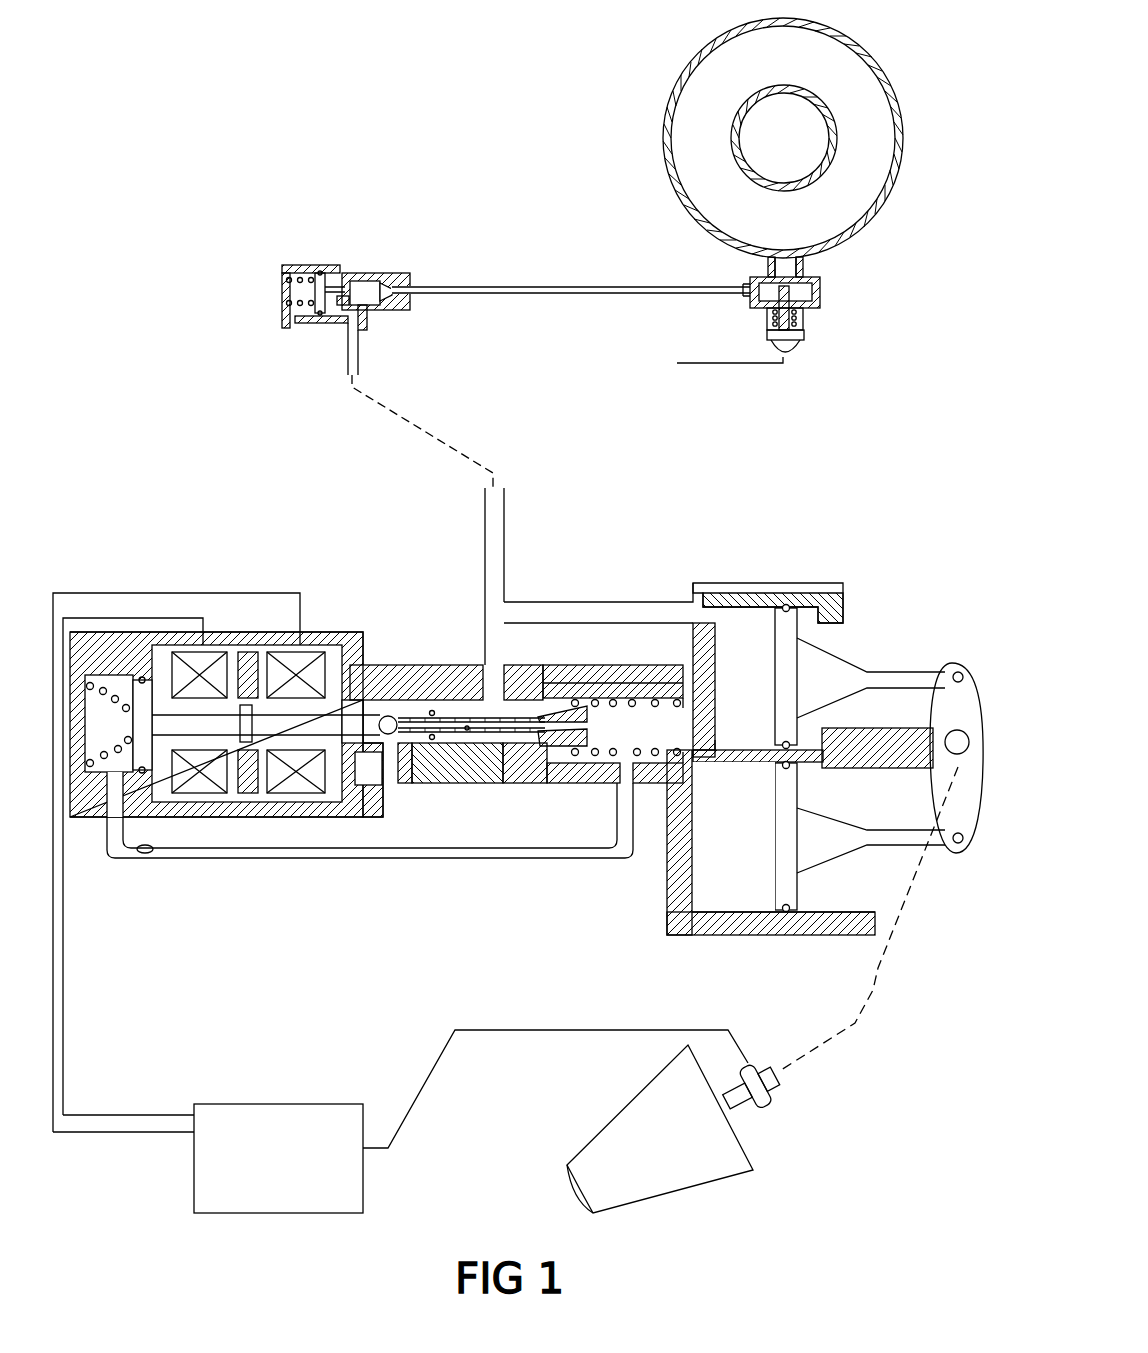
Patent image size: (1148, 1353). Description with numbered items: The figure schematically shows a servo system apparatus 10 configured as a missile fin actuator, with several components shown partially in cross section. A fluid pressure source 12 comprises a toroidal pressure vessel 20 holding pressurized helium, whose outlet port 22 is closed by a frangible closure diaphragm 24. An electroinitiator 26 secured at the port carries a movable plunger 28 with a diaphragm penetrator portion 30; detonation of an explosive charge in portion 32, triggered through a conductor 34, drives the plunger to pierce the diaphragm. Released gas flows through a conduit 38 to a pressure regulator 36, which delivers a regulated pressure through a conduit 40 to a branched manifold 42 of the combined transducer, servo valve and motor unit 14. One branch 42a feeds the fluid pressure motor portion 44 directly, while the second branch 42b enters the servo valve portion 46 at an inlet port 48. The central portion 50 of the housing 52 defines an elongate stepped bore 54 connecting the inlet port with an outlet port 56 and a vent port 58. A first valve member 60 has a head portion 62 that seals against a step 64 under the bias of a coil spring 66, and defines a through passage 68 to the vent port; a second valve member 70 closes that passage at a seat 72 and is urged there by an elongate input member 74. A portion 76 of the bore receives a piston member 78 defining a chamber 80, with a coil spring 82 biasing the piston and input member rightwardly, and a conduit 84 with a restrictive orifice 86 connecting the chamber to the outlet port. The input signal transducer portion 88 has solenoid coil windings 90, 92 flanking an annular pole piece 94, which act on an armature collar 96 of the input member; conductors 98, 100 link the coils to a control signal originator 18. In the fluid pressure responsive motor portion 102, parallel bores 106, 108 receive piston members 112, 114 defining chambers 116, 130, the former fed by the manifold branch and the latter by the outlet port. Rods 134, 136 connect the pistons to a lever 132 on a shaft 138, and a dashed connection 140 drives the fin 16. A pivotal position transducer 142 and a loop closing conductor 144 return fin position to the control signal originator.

The servo system apparatus 10 is at (835, 1145).
The fluid pressure source 12 is at (533, 184).
The combined control signal transducer, servo valve apparatus, and fluid pressure mo 14 is at (383, 552).
The vehicle control portion 16 is at (660, 1132).
The control signal originator 18 is at (288, 1174).
The toroidal pressure vessel 20 is at (662, 128).
The outlet port 22 is at (788, 262).
The frangible closure diaphragm 24 is at (768, 278).
The electroinitiator 26 is at (815, 306).
The movable plunger 28 is at (769, 319).
The diaphragm penetrator portion 30 is at (792, 294).
The explosive charge portion 32 is at (799, 348).
The conductor 34 is at (728, 374).
The pressure regulator 36 is at (341, 272).
The conduit 38 is at (554, 297).
The conduit 40 is at (385, 400).
The branched manifold 42 is at (485, 503).
The first manifold branch 42a is at (617, 590).
The second manifold branch 42b is at (497, 643).
The fluid pressure motor portion 44 is at (880, 518).
The servo valve portion 46 is at (498, 832).
The inlet port 48 is at (487, 685).
The central housing portion 50 is at (468, 773).
The housing 52 is at (675, 898).
The elongate stepped bore 54 is at (647, 760).
The outlet port 56 is at (698, 758).
The vent port 58 is at (395, 780).
The first valve member 60 is at (500, 765).
The head portion 62 is at (590, 732).
The step 64 is at (570, 765).
The coil spring 66 is at (660, 750).
The through passage 68 is at (460, 750).
The second valve member 70 is at (386, 716).
The seat 72 is at (396, 716).
The elongate input member 74 is at (303, 723).
The bore portion 76 is at (110, 770).
The piston member 78 is at (150, 760).
The chamber 80 is at (122, 737).
The coil spring 82 is at (107, 687).
The conduit 84 is at (283, 862).
The restrictive orifice 86 is at (145, 863).
The input signal transducer portion 88 is at (318, 833).
The solenoid coil winding 90 is at (207, 660).
The solenoid coil winding 92 is at (310, 660).
The annular pole piece 94 is at (248, 660).
The armature collar 96 is at (243, 745).
The electrical conductor 98 is at (65, 1025).
The electrical conductor 100 is at (75, 1117).
The fluid pressure responsive motor portion 102 is at (755, 937).
The bore 106 is at (733, 610).
The bore 108 is at (813, 912).
The piston member 112 is at (775, 635).
The piston member 114 is at (785, 788).
The chamber 116 is at (755, 696).
The chamber 130 is at (745, 852).
The lever 132 is at (968, 845).
The rod 134 is at (928, 665).
The rod 136 is at (906, 837).
The shaft 138 is at (935, 778).
The connection 140 is at (875, 990).
The pivotal position transducer 142 is at (783, 1040).
The loop closing conductor 144 is at (527, 1033).